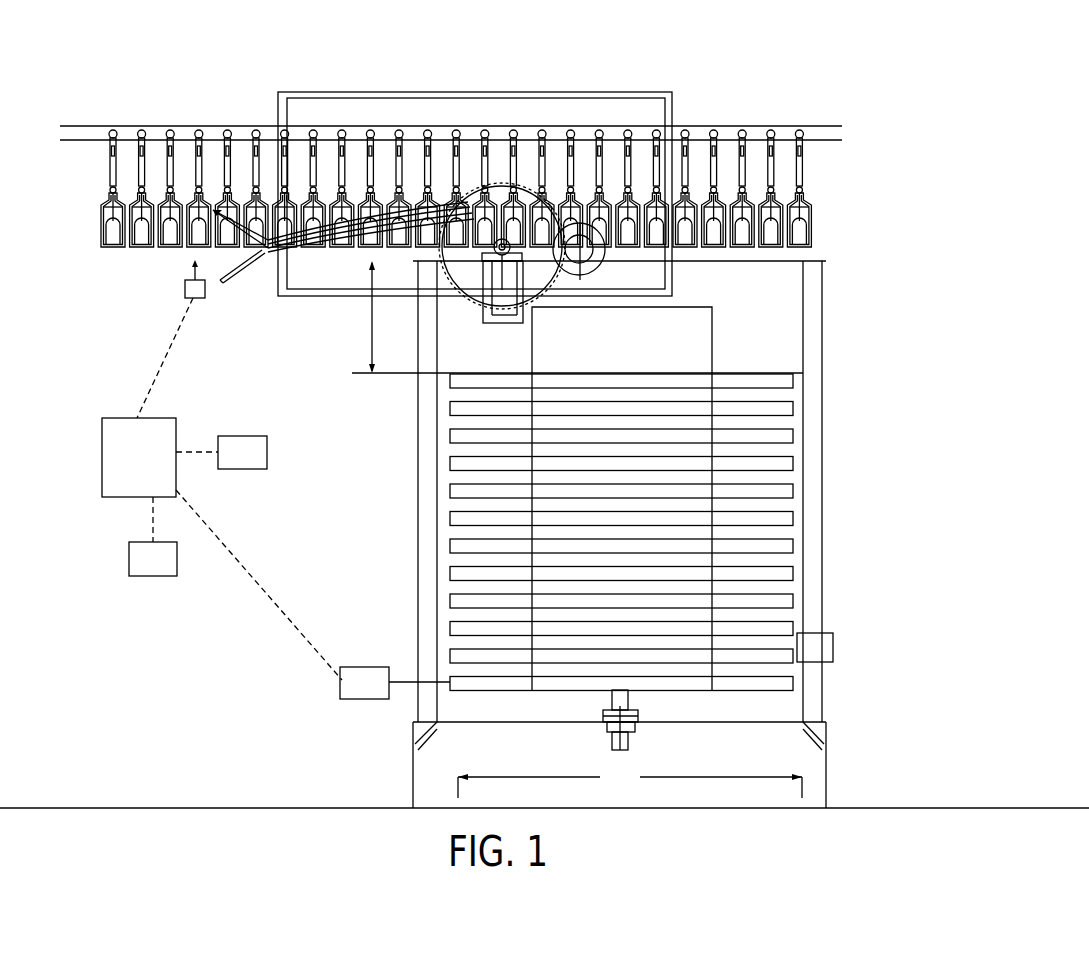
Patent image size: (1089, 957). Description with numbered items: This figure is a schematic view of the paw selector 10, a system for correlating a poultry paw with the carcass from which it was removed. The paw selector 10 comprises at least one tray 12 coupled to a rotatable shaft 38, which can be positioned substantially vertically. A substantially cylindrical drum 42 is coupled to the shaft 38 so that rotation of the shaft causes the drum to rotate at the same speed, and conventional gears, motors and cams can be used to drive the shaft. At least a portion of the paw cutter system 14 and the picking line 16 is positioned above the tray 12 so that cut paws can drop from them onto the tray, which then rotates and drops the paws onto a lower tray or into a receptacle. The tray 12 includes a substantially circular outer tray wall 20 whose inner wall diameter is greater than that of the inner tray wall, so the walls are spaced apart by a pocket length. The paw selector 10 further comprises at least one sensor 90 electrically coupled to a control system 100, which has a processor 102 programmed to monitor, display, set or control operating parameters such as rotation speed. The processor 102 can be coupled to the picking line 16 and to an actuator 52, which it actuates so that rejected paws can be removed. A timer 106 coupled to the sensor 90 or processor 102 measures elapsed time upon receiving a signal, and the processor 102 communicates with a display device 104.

The paw selector 10 is at (912, 355).
The tray 12 is at (450, 518).
The paw cutter system 14 is at (445, 248).
The picking line 16 is at (815, 131).
The outer tray wall 20 is at (793, 490).
The rotatable shaft 38 is at (603, 695).
The cylindrical drum 42 is at (722, 312).
The actuator 52 is at (353, 694).
The sensor 90 is at (183, 289).
The control system 100 is at (139, 457).
The processor 102 is at (121, 485).
The display device 104 is at (138, 570).
The timer 106 is at (228, 463).